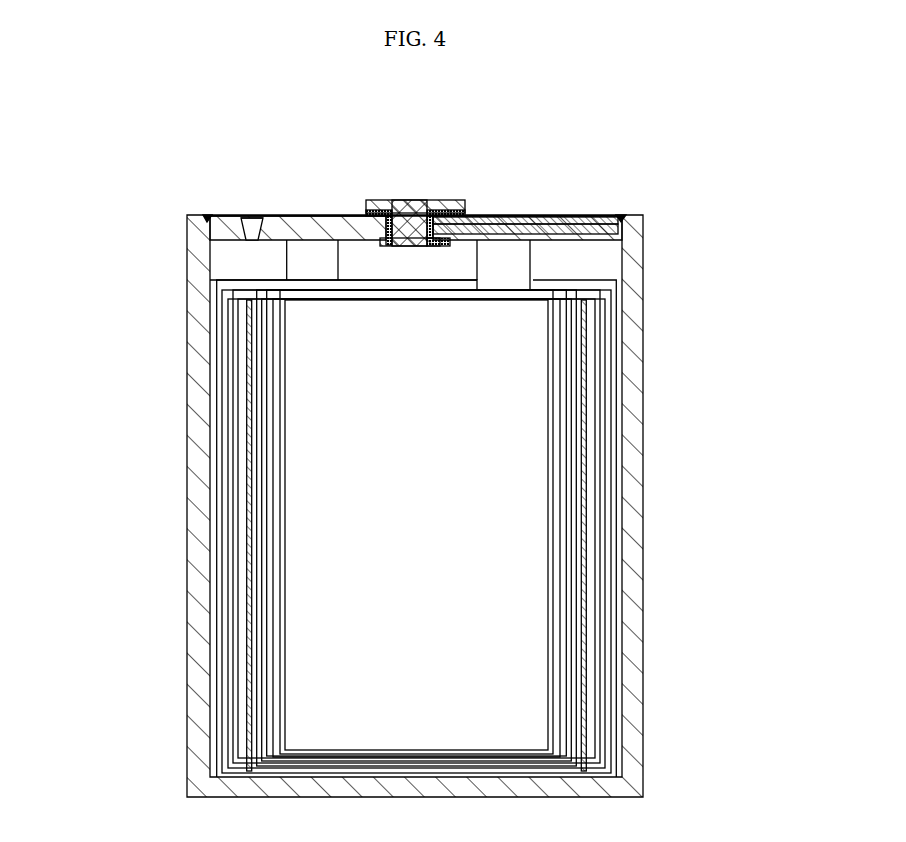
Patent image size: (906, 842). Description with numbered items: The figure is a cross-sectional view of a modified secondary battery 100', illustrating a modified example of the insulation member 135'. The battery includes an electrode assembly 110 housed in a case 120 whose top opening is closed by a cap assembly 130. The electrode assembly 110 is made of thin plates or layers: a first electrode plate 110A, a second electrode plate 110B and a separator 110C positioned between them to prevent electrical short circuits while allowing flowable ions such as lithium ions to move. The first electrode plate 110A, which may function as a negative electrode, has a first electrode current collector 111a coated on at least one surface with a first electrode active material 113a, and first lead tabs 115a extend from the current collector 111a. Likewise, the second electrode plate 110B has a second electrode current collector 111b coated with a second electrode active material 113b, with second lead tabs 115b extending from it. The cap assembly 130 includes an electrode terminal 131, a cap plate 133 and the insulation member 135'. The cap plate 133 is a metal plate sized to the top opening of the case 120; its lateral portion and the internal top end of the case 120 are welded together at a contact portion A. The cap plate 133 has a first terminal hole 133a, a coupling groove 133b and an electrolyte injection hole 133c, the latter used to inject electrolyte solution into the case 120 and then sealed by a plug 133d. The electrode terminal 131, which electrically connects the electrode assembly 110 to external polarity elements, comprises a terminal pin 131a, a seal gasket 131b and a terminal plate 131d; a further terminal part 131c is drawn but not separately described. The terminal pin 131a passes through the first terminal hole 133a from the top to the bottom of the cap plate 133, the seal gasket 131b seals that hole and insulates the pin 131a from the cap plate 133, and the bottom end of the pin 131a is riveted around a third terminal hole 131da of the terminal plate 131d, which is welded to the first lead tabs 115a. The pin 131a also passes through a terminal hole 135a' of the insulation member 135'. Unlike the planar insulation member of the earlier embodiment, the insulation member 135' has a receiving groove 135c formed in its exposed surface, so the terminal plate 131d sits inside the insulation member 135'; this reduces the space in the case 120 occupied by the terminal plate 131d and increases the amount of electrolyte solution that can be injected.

The rechargeable battery 100' is at (417, 440).
The electrode assembly 110 is at (417, 519).
The first electrode plate 110A is at (686, 524).
The second electrode plate 110B is at (146, 524).
The separator 110C is at (270, 418).
The first electrode current collector 111a is at (552, 358).
The second electrode current collector 111b is at (262, 357).
The first electrode active material 113a is at (528, 320).
The second electrode active material 113b is at (263, 320).
The first lead tabs 115a is at (528, 283).
The second lead tabs 115b is at (313, 262).
The case 120 is at (643, 472).
The cap assembly 130 is at (573, 158).
The electrode terminal 131 is at (492, 212).
The terminal pin 131a is at (412, 200).
The seal gasket 131b is at (445, 200).
The terminal connection layer 131c is at (491, 216).
The terminal plate 131d is at (525, 217).
The third terminal hole 131da is at (430, 250).
The cap plate 133 is at (406, 188).
The first terminal hole 133a is at (400, 202).
The coupling groove 133b is at (600, 216).
The electrolyte injection hole 133c is at (244, 218).
The plug 133d is at (260, 218).
The insulation member 135' is at (472, 274).
The insulating member body 135a' is at (343, 289).
The receiving groove 135c is at (531, 243).
The contact portion A is at (623, 215).